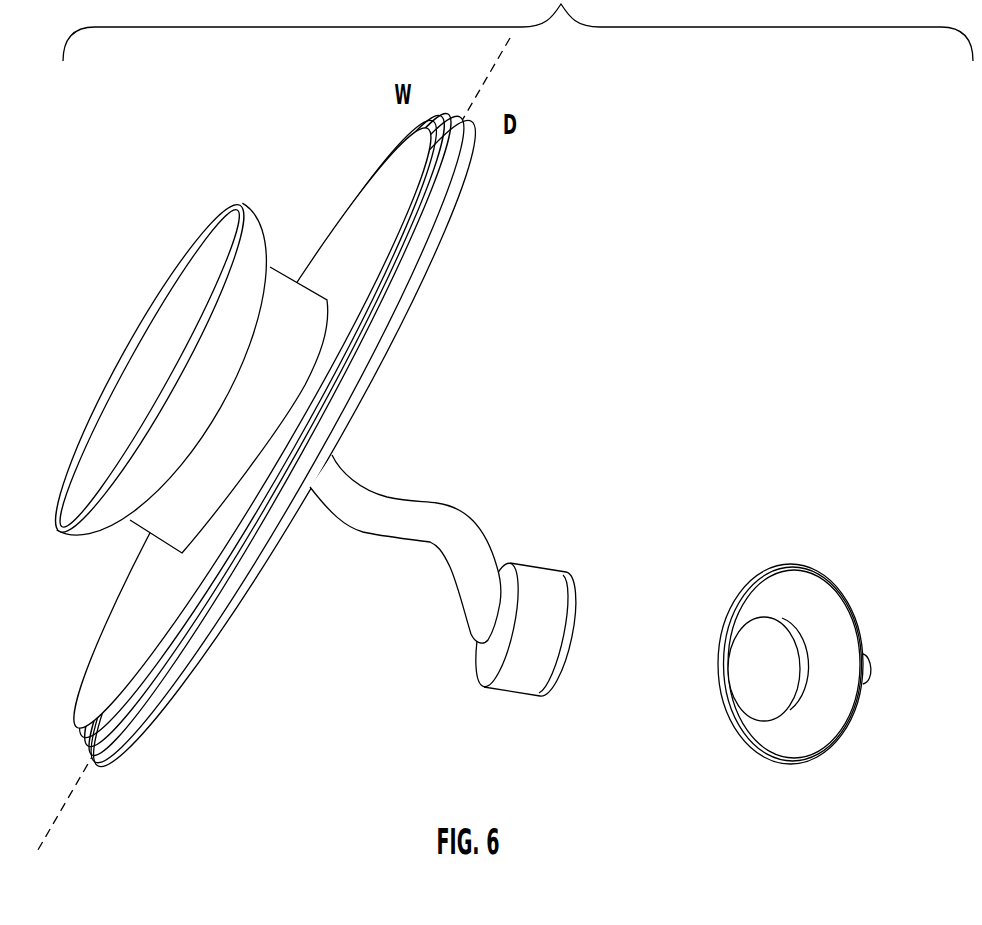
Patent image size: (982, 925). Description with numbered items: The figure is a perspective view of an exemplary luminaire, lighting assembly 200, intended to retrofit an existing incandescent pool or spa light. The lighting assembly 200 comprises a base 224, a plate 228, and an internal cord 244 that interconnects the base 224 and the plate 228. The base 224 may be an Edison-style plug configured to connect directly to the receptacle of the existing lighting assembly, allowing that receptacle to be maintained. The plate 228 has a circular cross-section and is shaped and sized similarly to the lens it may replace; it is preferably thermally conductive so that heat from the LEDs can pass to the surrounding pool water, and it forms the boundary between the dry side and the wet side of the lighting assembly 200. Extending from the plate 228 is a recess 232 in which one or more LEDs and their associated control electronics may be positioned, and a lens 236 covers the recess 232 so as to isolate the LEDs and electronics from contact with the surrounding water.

The lighting assembly 200 is at (621, 201).
The base 224 is at (489, 709).
The plate 228 is at (337, 220).
The recess 232 is at (146, 277).
The lens 236 is at (757, 688).
The internal cord 244 is at (451, 503).